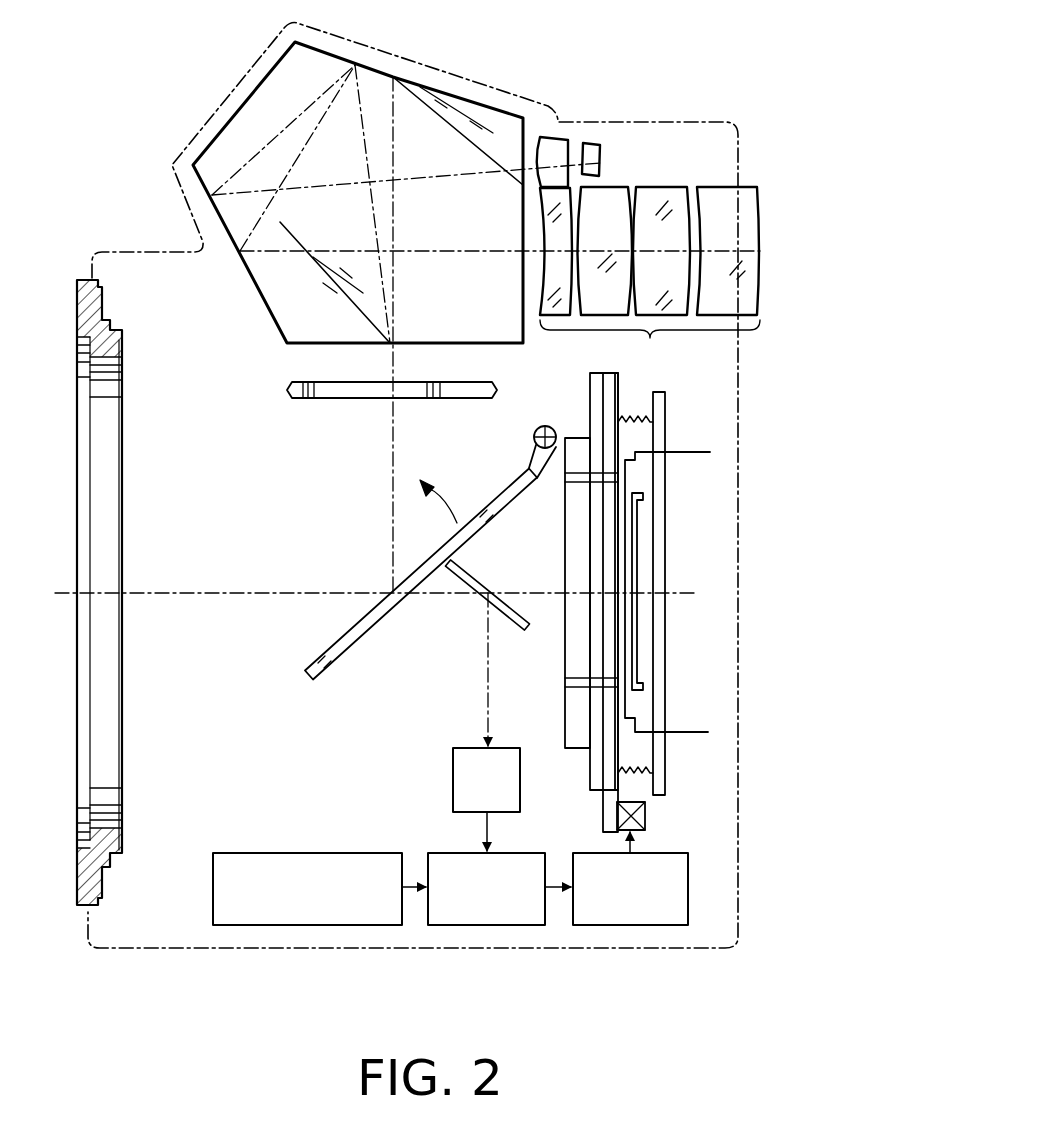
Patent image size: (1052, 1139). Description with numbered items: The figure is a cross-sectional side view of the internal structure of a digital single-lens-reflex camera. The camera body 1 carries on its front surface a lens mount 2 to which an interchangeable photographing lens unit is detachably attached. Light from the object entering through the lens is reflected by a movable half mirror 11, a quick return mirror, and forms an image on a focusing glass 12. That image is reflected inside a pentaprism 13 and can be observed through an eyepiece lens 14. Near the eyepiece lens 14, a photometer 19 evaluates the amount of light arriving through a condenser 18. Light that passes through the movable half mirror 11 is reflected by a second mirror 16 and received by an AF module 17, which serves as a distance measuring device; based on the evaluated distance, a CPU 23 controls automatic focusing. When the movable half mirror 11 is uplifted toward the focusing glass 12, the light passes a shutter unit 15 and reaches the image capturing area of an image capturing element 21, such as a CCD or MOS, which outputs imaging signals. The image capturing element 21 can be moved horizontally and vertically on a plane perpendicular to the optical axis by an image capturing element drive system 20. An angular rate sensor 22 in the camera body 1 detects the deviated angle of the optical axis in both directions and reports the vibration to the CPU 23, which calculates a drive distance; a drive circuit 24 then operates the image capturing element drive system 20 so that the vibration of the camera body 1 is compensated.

The camera body 1 is at (667, 947).
The lens mount 2 is at (85, 312).
The movable half mirror 11 is at (345, 642).
The focusing glass 12 is at (333, 391).
The pentaprism 13 is at (372, 67).
The eyepiece lens 14 is at (650, 276).
The shutter unit 15 is at (573, 713).
The second mirror 16 is at (477, 580).
The AF module 17 is at (452, 763).
The condenser 18 is at (557, 145).
The photometer 19 is at (600, 152).
The image capturing element drive system 20 is at (654, 818).
The image capturing element 21 is at (637, 578).
The angular rate sensor 22 is at (337, 826).
The CPU 23 is at (433, 853).
The drive circuit 24 is at (582, 852).